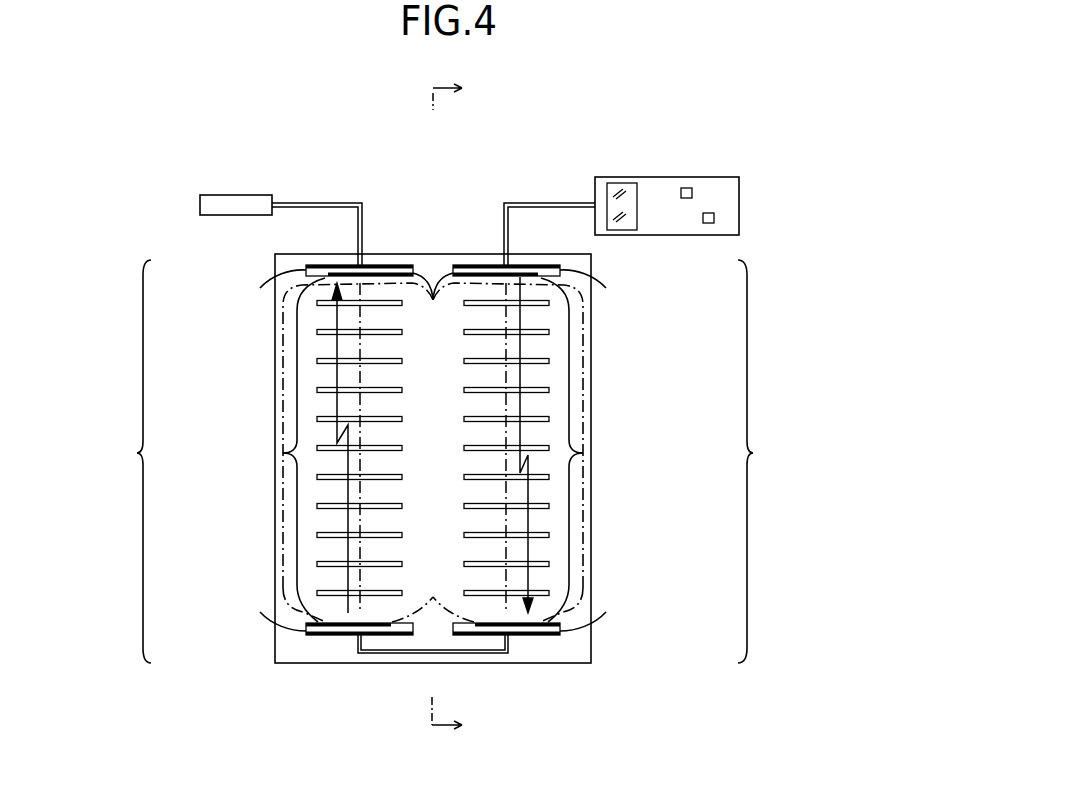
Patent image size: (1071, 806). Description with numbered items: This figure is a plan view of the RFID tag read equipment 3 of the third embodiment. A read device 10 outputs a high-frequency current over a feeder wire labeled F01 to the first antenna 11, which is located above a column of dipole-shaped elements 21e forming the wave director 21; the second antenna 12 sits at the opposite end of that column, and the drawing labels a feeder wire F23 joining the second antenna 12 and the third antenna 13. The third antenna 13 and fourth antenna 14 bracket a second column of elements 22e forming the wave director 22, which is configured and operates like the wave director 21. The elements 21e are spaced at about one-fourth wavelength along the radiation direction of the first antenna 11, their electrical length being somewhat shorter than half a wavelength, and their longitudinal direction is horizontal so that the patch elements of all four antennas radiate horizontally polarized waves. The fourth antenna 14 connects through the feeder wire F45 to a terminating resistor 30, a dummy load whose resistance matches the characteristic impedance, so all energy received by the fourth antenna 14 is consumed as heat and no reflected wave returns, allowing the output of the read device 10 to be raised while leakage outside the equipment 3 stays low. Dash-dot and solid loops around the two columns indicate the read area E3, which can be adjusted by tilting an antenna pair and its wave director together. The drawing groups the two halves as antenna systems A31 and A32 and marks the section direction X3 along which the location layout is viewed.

The RFID tag read equipment 3 is at (587, 102).
The read device 10 is at (663, 198).
The first antenna 11 is at (560, 272).
The second antenna 12 is at (560, 630).
The third antenna 13 is at (304, 630).
The fourth antenna 14 is at (304, 271).
The wave director 21 is at (569, 402).
The wave director 22 is at (314, 373).
The elements 21e is at (477, 393).
The elements 22e is at (388, 365).
The terminating resistor 30 is at (220, 203).
The read area E3 is at (283, 390).
The feeder wire F01 is at (562, 182).
The feeder wire F23 is at (433, 655).
The feeder wire F45 is at (327, 203).
The antenna system A31 is at (794, 461).
The antenna system A32 is at (98, 461).
The section line X3 is at (464, 407).